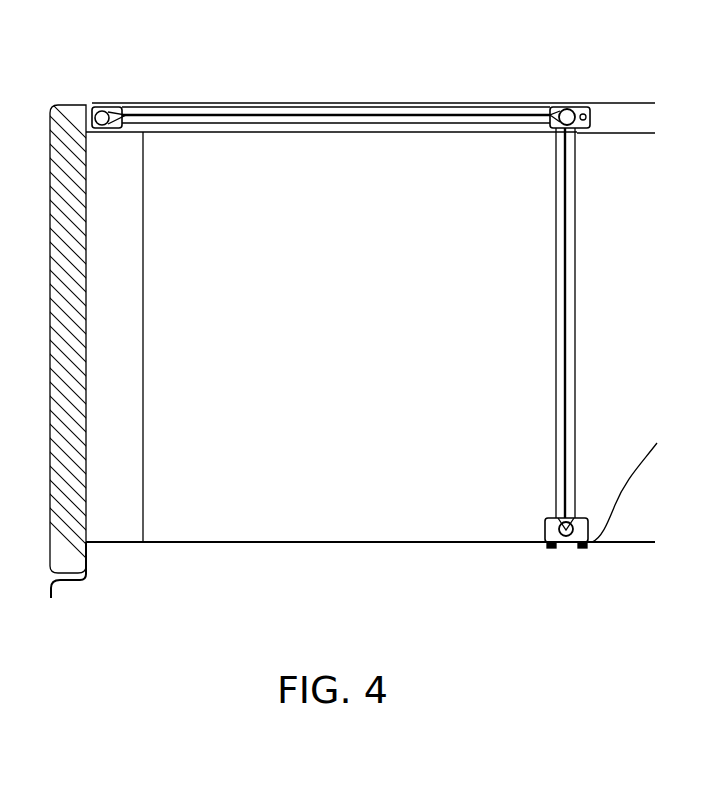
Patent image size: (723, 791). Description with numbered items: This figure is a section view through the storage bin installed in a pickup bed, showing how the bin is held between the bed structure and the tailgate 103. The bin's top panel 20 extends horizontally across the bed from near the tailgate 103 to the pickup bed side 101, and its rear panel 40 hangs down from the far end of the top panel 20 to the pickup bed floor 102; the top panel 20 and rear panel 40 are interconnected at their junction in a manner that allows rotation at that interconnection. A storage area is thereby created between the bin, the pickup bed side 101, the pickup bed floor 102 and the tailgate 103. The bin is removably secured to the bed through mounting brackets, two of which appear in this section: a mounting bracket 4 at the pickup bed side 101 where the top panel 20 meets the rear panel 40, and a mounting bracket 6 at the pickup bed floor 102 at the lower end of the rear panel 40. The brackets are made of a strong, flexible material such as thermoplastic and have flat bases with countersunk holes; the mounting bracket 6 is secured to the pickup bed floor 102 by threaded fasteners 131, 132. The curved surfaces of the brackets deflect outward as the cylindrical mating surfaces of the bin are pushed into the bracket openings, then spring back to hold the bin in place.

The tailgate 103 is at (67, 108).
The top panel 20 is at (323, 97).
The mounting bracket 4 is at (580, 107).
The pickup bed side 101 is at (615, 120).
The rear panel 40 is at (588, 315).
The pickup bed floor 102 is at (220, 542).
The mounting bracket 6 is at (548, 532).
The threaded fastener 132 is at (552, 546).
The threaded fastener 131 is at (584, 546).